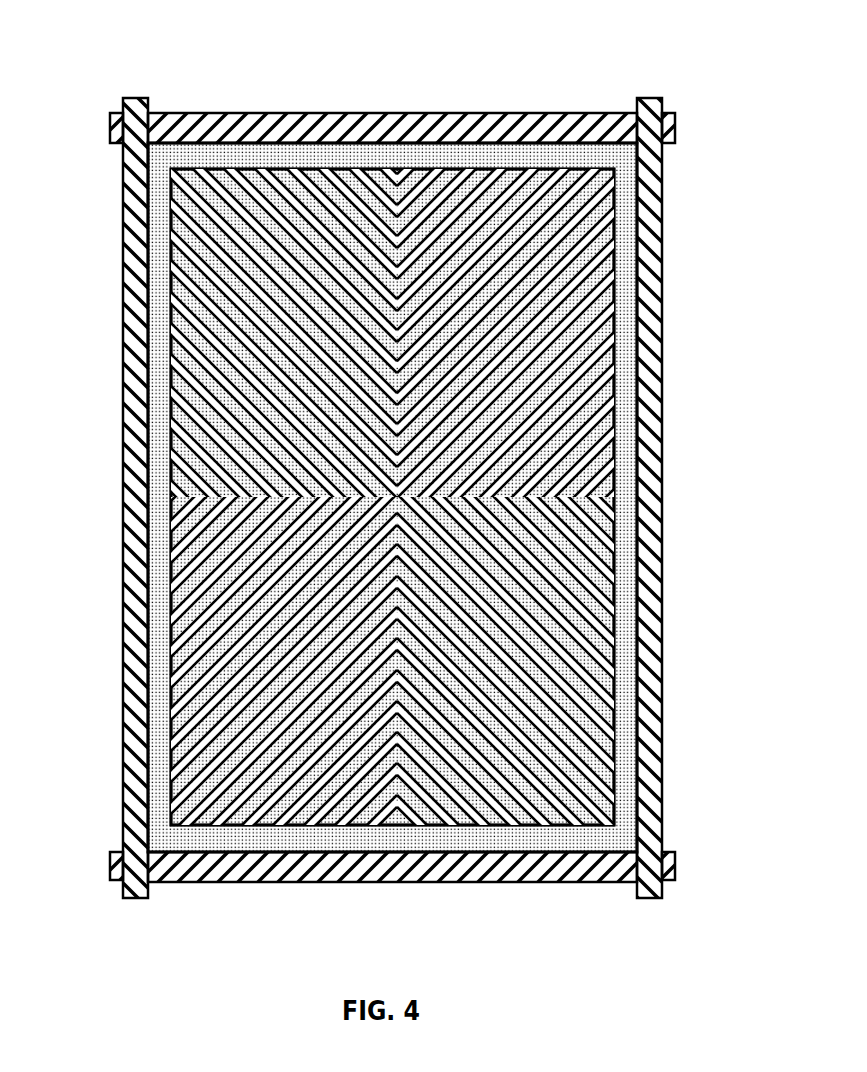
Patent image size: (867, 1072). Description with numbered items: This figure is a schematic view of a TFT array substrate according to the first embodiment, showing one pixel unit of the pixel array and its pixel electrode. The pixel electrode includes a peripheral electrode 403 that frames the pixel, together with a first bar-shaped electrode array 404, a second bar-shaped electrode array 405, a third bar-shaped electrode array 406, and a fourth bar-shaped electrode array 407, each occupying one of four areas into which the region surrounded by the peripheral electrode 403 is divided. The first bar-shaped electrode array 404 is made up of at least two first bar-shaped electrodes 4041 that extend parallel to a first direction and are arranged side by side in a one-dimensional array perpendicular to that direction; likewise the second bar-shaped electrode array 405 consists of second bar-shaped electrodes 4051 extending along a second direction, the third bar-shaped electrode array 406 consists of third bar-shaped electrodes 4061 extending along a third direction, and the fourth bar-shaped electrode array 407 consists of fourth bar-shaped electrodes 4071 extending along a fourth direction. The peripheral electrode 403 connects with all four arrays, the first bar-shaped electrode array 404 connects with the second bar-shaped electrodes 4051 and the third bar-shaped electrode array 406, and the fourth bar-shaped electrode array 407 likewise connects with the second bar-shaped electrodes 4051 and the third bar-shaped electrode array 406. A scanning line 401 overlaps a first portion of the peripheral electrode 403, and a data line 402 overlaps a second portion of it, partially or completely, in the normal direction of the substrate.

The scanning line 401 is at (110, 125).
The data line 402 is at (137, 98).
The peripheral electrode 403 is at (210, 148).
The first bar-shaped electrode array 404 is at (198, 359).
The first bar-shaped electrodes 4041 is at (166, 328).
The second bar-shaped electrode array 405 is at (597, 359).
The second bar-shaped electrodes 4051 is at (624, 318).
The third bar-shaped electrode array 406 is at (198, 670).
The third bar-shaped electrodes 4061 is at (159, 669).
The fourth bar-shaped electrode array 407 is at (597, 670).
The fourth bar-shaped electrodes 4071 is at (616, 660).